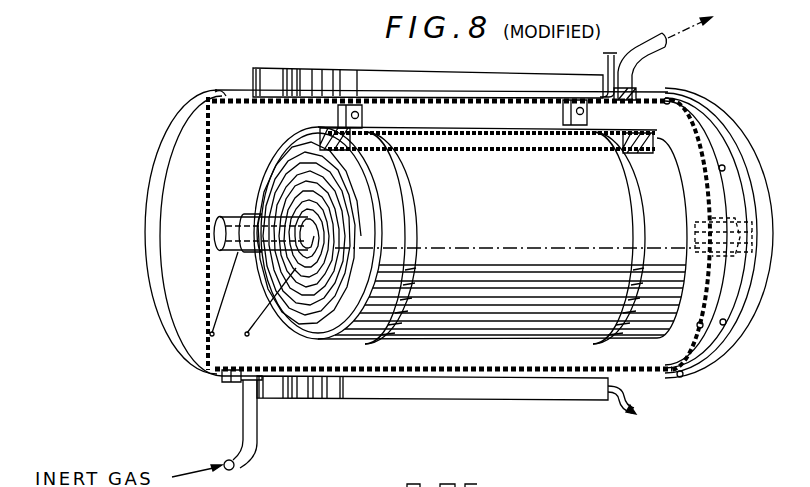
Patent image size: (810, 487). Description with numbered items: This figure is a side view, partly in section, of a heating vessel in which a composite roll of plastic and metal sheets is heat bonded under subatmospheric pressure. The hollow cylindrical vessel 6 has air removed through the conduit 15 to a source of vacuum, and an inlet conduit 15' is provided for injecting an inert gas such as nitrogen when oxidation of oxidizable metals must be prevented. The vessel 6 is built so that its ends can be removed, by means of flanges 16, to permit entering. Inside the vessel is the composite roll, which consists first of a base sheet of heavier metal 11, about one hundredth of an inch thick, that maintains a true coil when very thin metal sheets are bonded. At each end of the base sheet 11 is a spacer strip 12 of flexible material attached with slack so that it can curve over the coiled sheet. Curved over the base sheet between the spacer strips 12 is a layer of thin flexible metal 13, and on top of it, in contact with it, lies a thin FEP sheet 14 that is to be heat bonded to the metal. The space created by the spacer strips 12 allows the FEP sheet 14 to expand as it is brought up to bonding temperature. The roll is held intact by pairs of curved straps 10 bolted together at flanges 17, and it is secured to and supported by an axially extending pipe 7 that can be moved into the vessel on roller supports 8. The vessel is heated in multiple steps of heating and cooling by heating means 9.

The hollow cylindrical vessel 6 is at (767, 164).
The axially extending pipe 7 is at (222, 235).
The roller supports 8 is at (225, 291).
The heating means 9 is at (538, 75).
The curved straps 10 is at (420, 462).
The base sheet of heavier metal 11 is at (398, 150).
The spacer strip 12 is at (327, 128).
The layer of thin flexible metal 13 is at (490, 300).
The FEP sheet 14 is at (477, 147).
The conduit 15 is at (656, 58).
The inlet conduit 15' is at (257, 433).
The flanges 16 is at (240, 388).
The flanges 17 is at (367, 106).